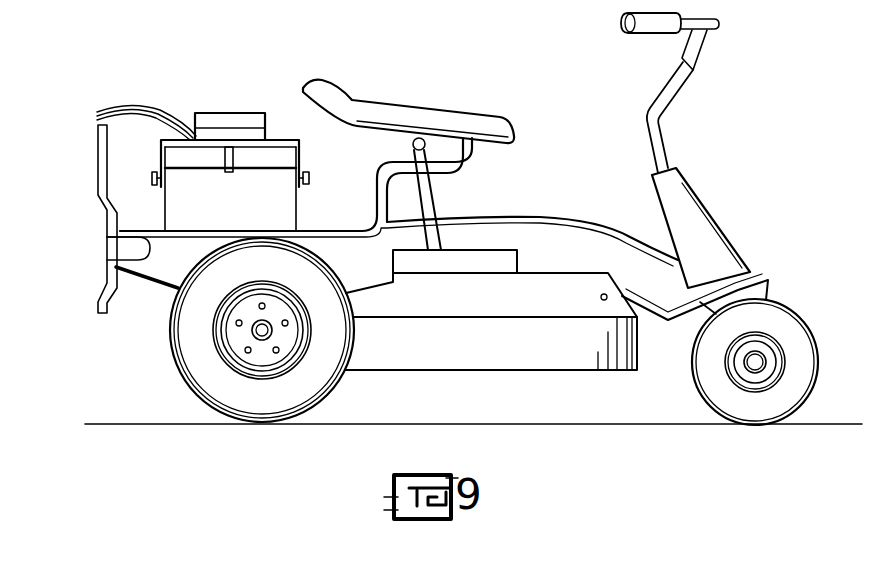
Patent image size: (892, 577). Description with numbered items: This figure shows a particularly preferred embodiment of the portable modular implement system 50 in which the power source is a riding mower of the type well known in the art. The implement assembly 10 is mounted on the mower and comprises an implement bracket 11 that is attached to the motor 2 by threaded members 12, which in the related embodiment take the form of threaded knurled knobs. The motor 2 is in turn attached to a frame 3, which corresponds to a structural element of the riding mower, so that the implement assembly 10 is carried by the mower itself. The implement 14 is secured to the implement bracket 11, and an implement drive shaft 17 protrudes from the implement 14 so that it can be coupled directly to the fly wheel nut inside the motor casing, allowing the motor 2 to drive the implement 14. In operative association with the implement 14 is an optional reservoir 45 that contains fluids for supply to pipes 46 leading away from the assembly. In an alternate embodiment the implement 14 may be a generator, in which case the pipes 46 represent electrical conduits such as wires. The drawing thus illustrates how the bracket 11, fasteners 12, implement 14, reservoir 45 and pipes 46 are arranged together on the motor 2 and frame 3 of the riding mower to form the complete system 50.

The motor 2 is at (272, 212).
The frame 3 is at (158, 230).
The implement assembly 10 is at (218, 142).
The implement bracket 11 is at (276, 140).
The threaded members 12 is at (152, 177).
The implement 14 is at (254, 133).
The implement drive shaft 17 is at (234, 156).
The reservoir 45 is at (232, 122).
The pipes 46 is at (143, 118).
The portable modular implement system 50 is at (473, 219).